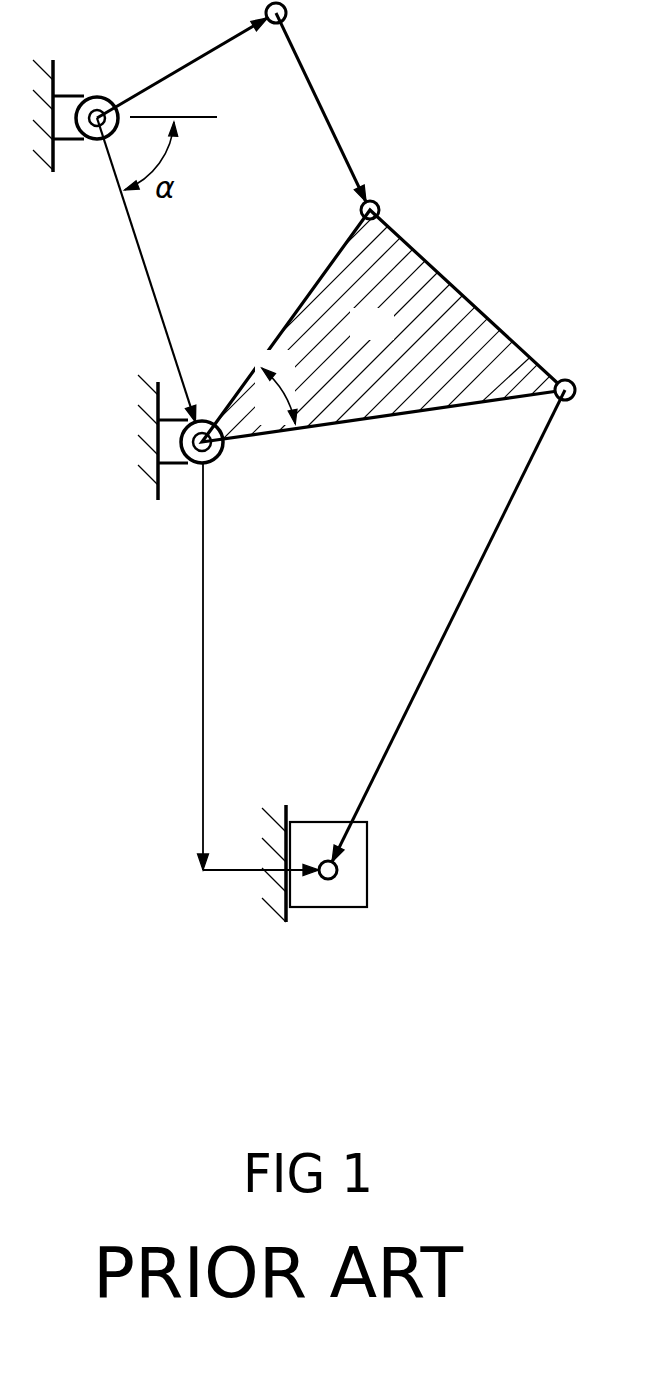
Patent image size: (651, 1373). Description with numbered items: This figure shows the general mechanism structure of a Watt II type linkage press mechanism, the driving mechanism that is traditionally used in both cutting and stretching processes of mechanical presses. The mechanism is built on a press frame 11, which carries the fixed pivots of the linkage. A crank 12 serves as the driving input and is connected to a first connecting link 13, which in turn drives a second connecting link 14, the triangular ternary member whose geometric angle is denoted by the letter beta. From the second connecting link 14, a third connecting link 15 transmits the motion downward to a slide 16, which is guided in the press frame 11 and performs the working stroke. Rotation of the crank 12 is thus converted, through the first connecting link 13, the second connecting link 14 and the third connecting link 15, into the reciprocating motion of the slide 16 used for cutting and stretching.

The press frame 11 is at (148, 309).
The crank 12 is at (191, 60).
The connecting link 1 13 is at (327, 116).
The connecting link 2 14 is at (385, 325).
The connecting link 3 15 is at (448, 626).
The slide 16 is at (310, 692).